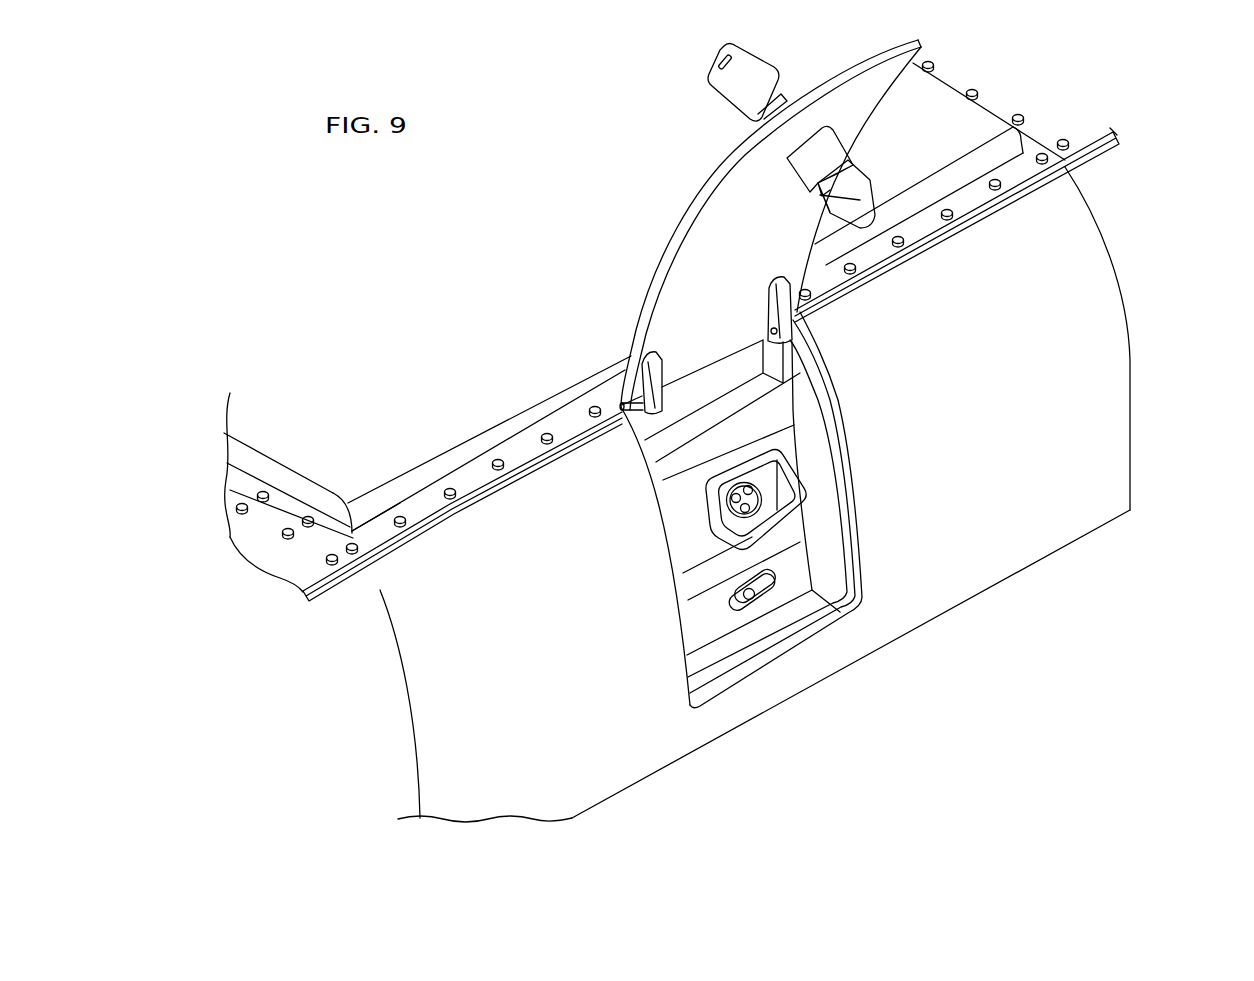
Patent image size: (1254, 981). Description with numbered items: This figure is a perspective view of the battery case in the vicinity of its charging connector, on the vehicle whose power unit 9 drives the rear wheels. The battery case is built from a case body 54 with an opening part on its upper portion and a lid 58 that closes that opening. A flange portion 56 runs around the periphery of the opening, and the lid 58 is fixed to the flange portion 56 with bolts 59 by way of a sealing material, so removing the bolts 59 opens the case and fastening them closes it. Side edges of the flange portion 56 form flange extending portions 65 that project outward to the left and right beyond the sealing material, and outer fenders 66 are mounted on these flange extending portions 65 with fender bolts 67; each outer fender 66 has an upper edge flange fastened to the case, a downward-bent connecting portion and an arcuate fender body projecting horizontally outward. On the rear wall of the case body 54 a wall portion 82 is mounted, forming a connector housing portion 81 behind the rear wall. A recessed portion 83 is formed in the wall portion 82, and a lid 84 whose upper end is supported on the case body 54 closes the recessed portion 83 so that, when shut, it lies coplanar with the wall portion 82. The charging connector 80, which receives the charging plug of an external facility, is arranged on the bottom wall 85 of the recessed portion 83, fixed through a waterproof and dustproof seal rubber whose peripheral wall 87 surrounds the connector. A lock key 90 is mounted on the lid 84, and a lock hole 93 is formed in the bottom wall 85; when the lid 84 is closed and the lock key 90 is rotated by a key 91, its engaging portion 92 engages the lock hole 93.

The power unit 9 is at (812, 494).
The case body 54 is at (912, 216).
The flange portion 56 is at (368, 557).
The lid 58 is at (427, 491).
The bolts 59 is at (305, 530).
The flange extending portions 65 is at (1077, 165).
The outer fenders 66 is at (1113, 128).
The fender bolts 67 is at (285, 537).
The charging connector 80 is at (753, 500).
The connector housing portion 81 is at (1085, 312).
The wall portion 82 is at (1100, 360).
The recessed portion 83 is at (806, 539).
The lid 84 is at (848, 103).
The bottom wall 85 is at (698, 538).
The peripheral wall 87 is at (787, 476).
The lock key 90 is at (872, 178).
The key 91 is at (737, 92).
The engaging portion 92 is at (868, 172).
The lock hole 93 is at (760, 598).